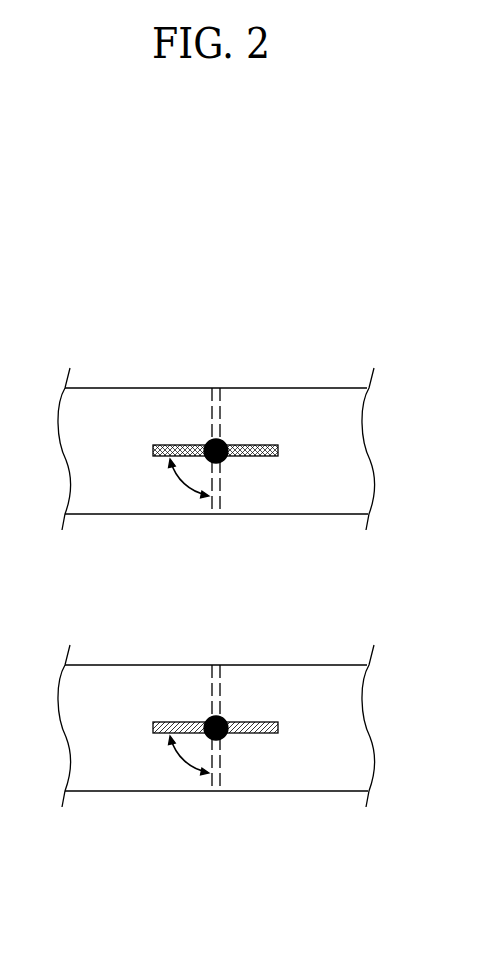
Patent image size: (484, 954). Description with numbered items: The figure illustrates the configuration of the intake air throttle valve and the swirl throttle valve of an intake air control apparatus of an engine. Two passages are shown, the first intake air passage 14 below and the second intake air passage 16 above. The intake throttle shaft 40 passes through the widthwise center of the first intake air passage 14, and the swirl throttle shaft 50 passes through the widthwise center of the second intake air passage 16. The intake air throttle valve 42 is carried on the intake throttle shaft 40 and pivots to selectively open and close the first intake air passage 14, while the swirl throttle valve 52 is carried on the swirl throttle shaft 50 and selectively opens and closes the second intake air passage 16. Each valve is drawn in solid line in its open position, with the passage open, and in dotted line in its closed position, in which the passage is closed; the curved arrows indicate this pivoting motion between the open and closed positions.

The first intake air passage 14 is at (216, 702).
The second intake air passage 16 is at (335, 388).
The intake throttle shaft 40 is at (202, 669).
The intake air throttle valve 42 is at (217, 665).
The swirl throttle shaft 50 is at (207, 445).
The swirl throttle valve 52 is at (265, 445).